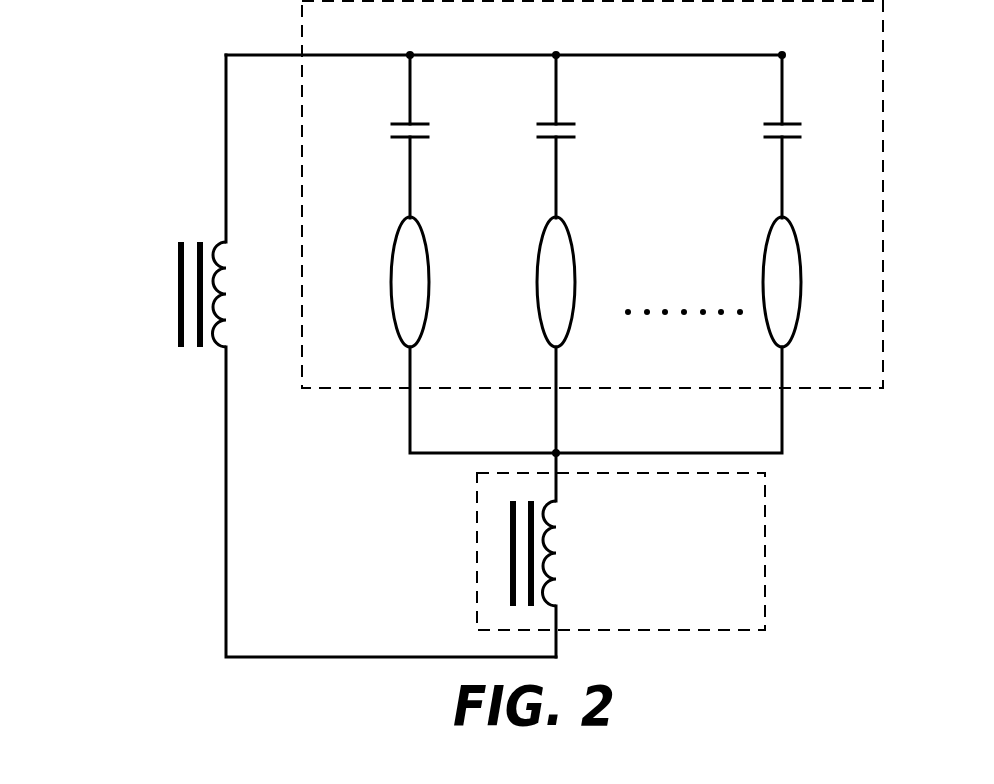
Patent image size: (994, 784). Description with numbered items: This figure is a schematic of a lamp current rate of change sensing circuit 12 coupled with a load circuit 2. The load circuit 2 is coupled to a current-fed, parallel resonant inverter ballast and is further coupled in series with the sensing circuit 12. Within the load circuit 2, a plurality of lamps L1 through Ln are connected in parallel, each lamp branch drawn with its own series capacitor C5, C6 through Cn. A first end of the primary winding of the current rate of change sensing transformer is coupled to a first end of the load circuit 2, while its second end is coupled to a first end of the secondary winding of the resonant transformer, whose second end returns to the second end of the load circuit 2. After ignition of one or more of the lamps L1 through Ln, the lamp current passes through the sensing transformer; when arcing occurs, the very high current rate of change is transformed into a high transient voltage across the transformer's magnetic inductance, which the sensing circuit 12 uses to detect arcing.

The load circuit 2 is at (526, 229).
The lamp current rate of change sensing circuit 12 is at (657, 551).
The capacitor C5 is at (433, 122).
The capacitor C6 is at (578, 122).
The capacitor Cn is at (807, 118).
The lamp L1 is at (465, 282).
The lamp Ln is at (804, 282).